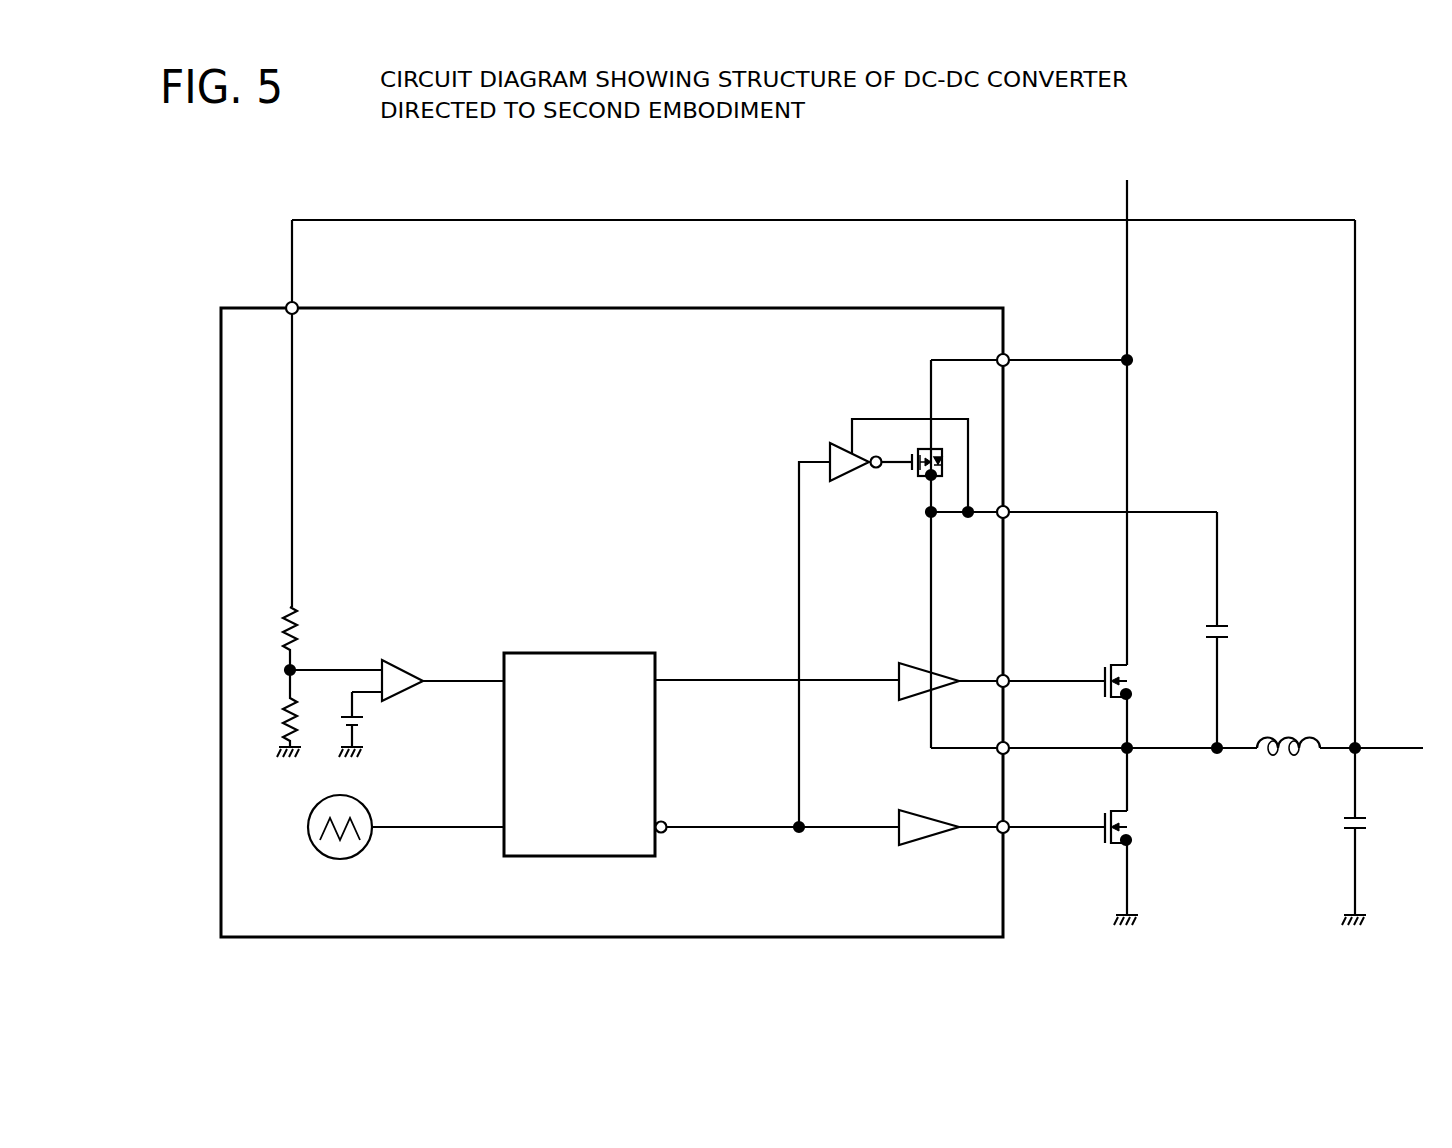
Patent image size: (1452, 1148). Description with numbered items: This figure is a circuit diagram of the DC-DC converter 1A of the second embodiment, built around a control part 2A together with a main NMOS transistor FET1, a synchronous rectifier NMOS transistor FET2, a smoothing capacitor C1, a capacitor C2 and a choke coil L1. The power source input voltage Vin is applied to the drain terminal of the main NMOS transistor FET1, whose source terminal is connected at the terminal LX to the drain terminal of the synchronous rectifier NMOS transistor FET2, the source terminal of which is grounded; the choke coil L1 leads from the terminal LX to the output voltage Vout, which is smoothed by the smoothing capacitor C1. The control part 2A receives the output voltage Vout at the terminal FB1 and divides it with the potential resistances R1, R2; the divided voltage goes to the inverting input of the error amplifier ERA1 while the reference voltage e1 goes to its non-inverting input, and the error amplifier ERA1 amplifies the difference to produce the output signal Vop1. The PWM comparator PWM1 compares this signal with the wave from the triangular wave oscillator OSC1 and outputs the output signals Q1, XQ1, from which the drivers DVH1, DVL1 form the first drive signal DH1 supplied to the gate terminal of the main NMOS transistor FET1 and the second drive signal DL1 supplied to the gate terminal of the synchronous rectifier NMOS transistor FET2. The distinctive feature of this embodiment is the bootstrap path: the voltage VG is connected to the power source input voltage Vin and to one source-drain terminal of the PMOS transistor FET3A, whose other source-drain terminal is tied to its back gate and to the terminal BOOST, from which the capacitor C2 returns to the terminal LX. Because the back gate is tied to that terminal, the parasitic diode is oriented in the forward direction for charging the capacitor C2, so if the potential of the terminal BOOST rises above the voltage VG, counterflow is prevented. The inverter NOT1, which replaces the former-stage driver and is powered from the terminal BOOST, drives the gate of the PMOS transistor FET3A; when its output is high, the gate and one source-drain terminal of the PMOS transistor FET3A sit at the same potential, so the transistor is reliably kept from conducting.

The DC-DC converter 1A is at (776, 210).
The control part 2A is at (637, 307).
The feedback terminal FB1 is at (272, 413).
The voltage VG is at (1029, 348).
The power source input voltage Vin is at (1127, 199).
The inverter NOT1 is at (829, 455).
The PMOS transistor FET3A is at (925, 486).
The terminal BOOST is at (1074, 500).
The potential resistance R1 is at (272, 638).
The potential resistance R2 is at (274, 713).
The error amplifier ERA1 is at (356, 668).
The reference voltage e1 is at (364, 724).
The output signal Vop1 is at (463, 667).
The PWM comparator PWM1 is at (650, 765).
The triangular wave oscillator OSC1 is at (406, 840).
The output signal Q1 is at (777, 666).
The output signal XQ1 is at (778, 817).
The driver DVH1 is at (912, 668).
The driver DVL1 is at (916, 814).
The first drive signal DH1 is at (1032, 669).
The second drive signal DL1 is at (1032, 816).
The switching node terminal LX is at (1094, 736).
The main NMOS transistor FET1 is at (1143, 681).
The synchronous rectifier NMOS transistor FET2 is at (1143, 827).
The capacitor C2 is at (1200, 630).
The choke coil L1 is at (1288, 731).
The smoothing capacitor C1 is at (1372, 823).
The output voltage Vout is at (1374, 747).